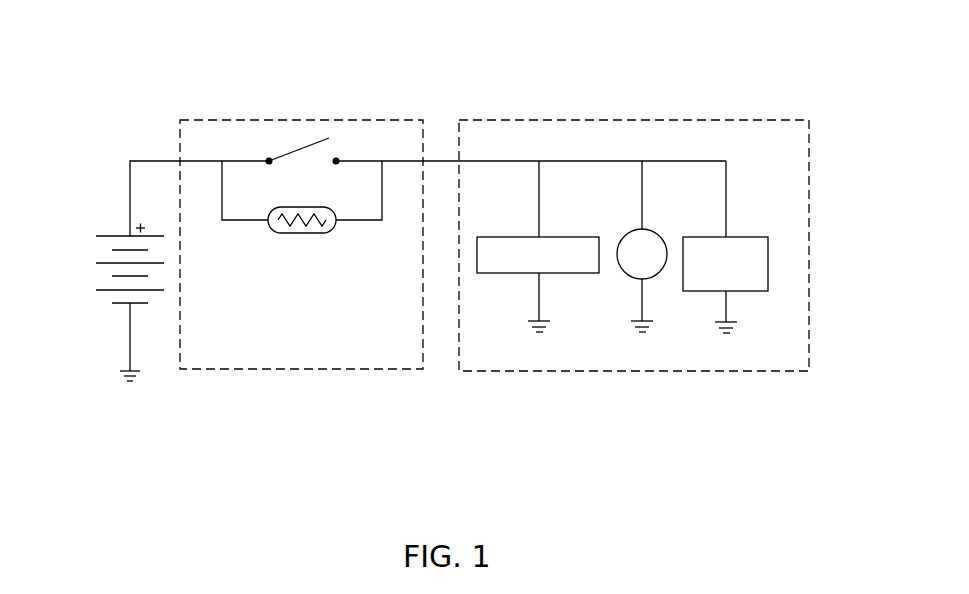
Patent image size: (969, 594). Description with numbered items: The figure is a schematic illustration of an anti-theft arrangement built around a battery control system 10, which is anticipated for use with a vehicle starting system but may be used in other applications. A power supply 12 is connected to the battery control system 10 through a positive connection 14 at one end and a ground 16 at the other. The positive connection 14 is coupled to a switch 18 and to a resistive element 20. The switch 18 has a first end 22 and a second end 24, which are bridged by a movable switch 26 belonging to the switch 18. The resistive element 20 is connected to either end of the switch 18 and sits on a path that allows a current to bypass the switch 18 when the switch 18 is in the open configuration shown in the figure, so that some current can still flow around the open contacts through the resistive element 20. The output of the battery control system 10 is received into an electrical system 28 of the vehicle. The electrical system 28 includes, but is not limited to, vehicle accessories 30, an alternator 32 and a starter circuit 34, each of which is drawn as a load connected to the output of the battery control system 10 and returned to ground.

The battery control system 10 is at (372, 58).
The power supply 12 is at (97, 263).
The positive connection 14 is at (130, 179).
The ground 16 is at (120, 377).
The switch 18 is at (332, 135).
The resistive element 20 is at (302, 232).
The first end 22 is at (238, 161).
The second end 24 is at (358, 160).
The movable switch 26 is at (290, 157).
The electrical system 28 is at (718, 120).
The vehicle accessories 30 is at (562, 236).
The alternator 32 is at (658, 233).
The starter circuit 34 is at (768, 237).